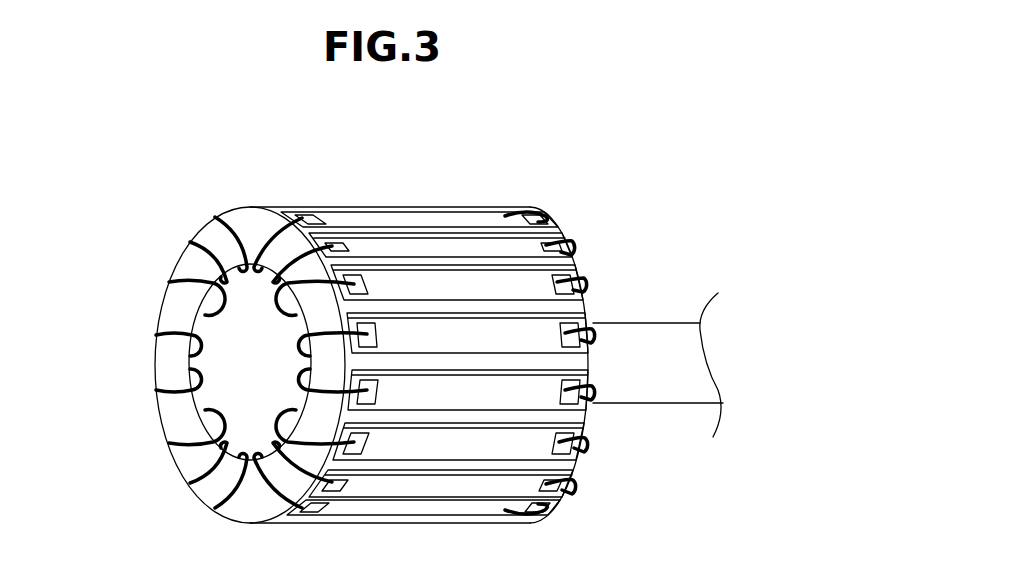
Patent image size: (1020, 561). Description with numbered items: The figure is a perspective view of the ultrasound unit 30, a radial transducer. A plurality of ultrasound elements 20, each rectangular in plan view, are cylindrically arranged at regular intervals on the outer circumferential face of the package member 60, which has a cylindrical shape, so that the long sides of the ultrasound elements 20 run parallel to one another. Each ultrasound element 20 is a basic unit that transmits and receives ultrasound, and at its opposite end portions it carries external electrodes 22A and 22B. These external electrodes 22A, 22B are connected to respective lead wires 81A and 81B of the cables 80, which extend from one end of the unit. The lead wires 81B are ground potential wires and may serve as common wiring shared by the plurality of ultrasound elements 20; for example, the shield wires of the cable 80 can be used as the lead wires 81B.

The ultrasound element 20 is at (423, 232).
The external electrode 22A is at (343, 233).
The external electrode 22B is at (525, 247).
The ultrasound unit 30 is at (695, 227).
The package member 60 is at (200, 227).
The cable 80 is at (620, 323).
The lead wire 81A is at (270, 225).
The lead wire 81B is at (557, 232).